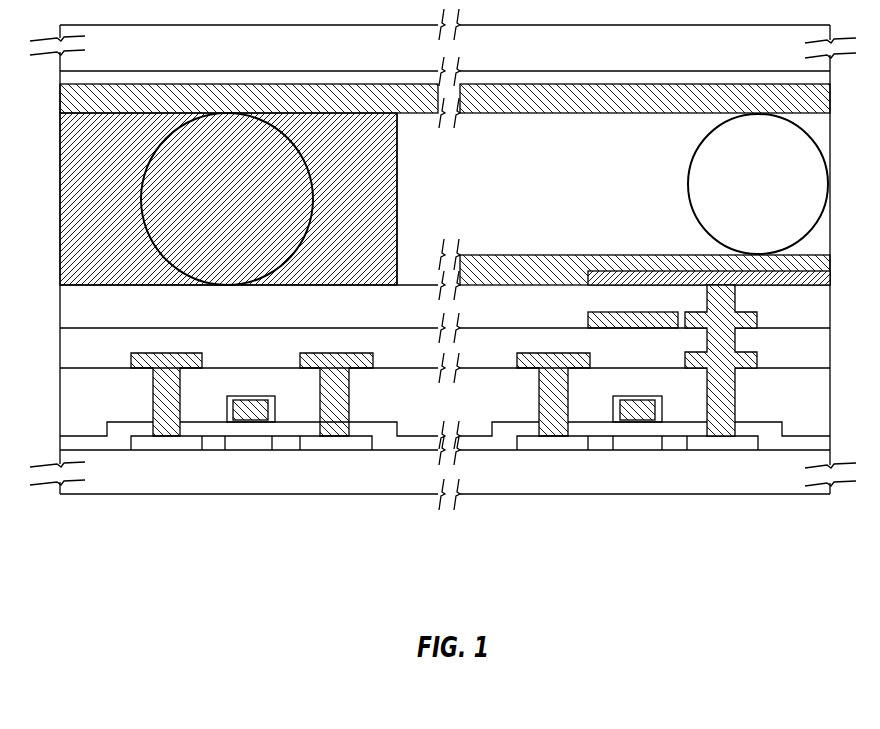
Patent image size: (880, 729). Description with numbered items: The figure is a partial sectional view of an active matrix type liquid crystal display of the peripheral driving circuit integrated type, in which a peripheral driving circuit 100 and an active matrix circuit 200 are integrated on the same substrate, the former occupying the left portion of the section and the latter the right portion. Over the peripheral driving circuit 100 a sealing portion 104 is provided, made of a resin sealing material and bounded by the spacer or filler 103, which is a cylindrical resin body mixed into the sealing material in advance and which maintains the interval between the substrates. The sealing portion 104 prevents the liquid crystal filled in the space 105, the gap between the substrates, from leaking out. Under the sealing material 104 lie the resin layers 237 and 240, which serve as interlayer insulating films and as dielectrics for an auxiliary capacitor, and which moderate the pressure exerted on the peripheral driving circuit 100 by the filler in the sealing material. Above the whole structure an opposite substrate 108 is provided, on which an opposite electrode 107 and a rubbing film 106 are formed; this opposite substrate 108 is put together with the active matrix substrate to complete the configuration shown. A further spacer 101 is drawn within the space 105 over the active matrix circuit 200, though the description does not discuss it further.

The peripheral driving circuit 100 is at (273, 612).
The active matrix circuit 200 is at (656, 612).
The spacer 101 is at (703, 163).
The filler 103 is at (251, 209).
The sealing portion 104 is at (387, 180).
The space 105 is at (583, 209).
The rubbing film 106 is at (575, 113).
The opposite electrode 107 is at (172, 74).
The opposite substrate 108 is at (238, 32).
The resin layer 237 is at (179, 341).
The resin layer 240 is at (213, 320).